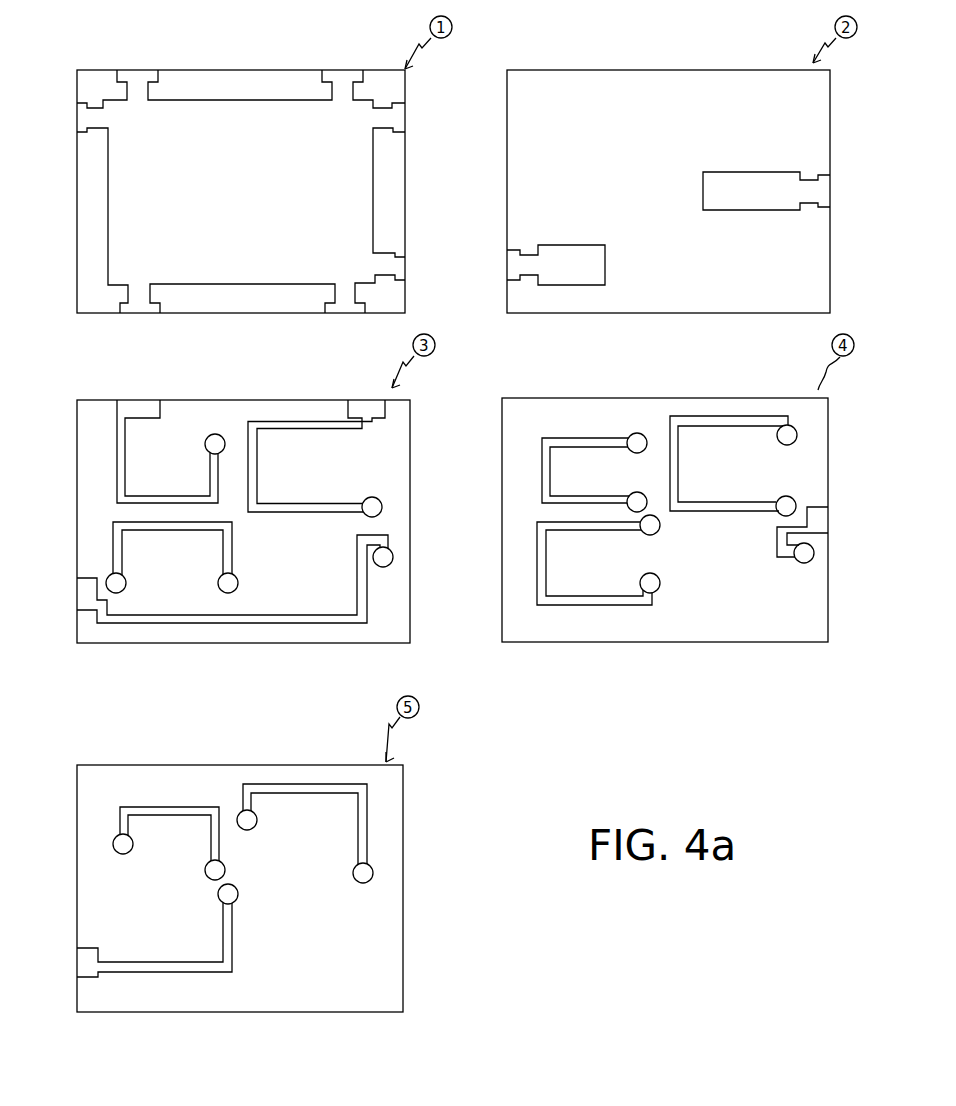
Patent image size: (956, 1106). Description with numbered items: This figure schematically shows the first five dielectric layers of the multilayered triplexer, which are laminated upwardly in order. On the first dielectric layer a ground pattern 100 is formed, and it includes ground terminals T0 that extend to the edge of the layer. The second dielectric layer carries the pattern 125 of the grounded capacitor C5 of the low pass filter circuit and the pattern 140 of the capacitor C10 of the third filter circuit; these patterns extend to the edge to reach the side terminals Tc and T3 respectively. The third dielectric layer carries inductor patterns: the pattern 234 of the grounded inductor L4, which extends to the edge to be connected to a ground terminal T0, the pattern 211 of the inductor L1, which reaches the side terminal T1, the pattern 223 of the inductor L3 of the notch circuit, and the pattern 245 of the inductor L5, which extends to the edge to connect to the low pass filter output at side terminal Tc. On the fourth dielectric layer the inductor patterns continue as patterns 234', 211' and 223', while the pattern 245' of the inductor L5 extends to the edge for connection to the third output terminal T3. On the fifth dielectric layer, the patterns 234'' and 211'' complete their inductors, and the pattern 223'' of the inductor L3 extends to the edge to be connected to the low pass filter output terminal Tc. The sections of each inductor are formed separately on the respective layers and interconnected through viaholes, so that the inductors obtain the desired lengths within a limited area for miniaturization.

The ground pattern 100 is at (347, 88).
The pattern of capacitor C10 140 is at (818, 187).
The pattern of grounded capacitor C5 125 is at (568, 243).
The pattern of inductor L4 234 is at (121, 451).
The pattern of inductor L1 211 is at (354, 458).
The pattern of inductor L5 245 is at (235, 616).
The pattern of inductor L3 223 is at (192, 601).
The pattern of inductor L4 234' is at (594, 436).
The pattern of inductor L1 211' is at (733, 437).
The pattern of inductor L3 223' is at (598, 599).
The pattern of inductor L5 245' is at (792, 595).
The pattern of inductor L4 234'' is at (169, 803).
The pattern of inductor L1 211'' is at (305, 804).
The pattern of inductor L3 223'' is at (157, 971).
The ground terminal T0 is at (282, 218).
The first output terminal side terminal T1 is at (363, 383).
The third output terminal side terminal T3 is at (847, 356).
The low pass filter output side terminal Tc is at (267, 616).